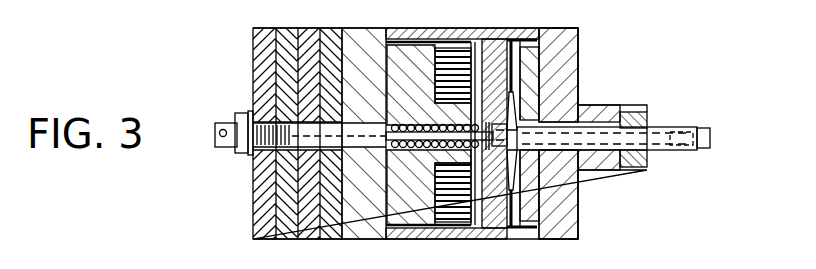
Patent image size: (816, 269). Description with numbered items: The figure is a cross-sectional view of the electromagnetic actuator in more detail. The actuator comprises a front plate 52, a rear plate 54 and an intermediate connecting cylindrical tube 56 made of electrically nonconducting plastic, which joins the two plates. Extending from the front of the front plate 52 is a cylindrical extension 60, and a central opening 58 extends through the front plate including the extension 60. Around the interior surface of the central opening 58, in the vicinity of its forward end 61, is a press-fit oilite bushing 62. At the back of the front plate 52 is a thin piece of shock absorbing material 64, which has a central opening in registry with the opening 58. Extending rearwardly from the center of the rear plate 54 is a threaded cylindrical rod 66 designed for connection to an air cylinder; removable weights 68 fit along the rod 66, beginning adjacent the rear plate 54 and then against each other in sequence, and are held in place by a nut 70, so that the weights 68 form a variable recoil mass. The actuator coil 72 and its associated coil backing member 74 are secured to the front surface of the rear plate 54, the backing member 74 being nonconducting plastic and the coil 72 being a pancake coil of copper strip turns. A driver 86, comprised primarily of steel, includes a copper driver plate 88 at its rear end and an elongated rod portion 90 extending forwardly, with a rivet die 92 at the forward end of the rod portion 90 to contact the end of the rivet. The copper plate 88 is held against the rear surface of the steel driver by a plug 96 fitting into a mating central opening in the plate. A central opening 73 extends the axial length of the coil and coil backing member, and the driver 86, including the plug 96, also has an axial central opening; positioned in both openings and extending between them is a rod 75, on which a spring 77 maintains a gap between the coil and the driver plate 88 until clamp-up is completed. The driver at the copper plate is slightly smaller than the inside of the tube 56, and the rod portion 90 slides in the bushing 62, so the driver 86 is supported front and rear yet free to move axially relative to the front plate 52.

The front plate 52 is at (577, 30).
The rear plate 54 is at (356, 28).
The connecting cylindrical tube 56 is at (503, 30).
The central opening 58 is at (585, 169).
The cylindrical extension 60 is at (602, 107).
The forward end 61 is at (647, 114).
The oilite bushing 62 is at (650, 122).
The shock absorbing material 64 is at (531, 60).
The cylindrical rod 66 is at (286, 152).
The removable weights 68 is at (330, 28).
The nut 70 is at (248, 118).
The actuator coil 72 is at (452, 47).
The central opening 73 is at (425, 168).
The coil backing member 74 is at (407, 57).
The rod 75 is at (410, 124).
The spring 77 is at (405, 150).
The driver 86 is at (556, 190).
The copper driver plate 88 is at (512, 240).
The rod portion 90 is at (658, 150).
The rivet die 92 is at (706, 148).
The plug 96 is at (491, 118).